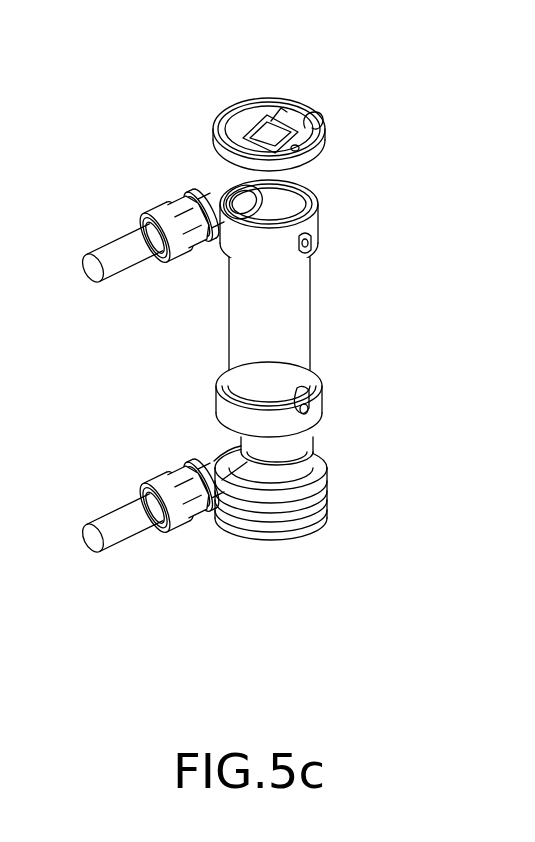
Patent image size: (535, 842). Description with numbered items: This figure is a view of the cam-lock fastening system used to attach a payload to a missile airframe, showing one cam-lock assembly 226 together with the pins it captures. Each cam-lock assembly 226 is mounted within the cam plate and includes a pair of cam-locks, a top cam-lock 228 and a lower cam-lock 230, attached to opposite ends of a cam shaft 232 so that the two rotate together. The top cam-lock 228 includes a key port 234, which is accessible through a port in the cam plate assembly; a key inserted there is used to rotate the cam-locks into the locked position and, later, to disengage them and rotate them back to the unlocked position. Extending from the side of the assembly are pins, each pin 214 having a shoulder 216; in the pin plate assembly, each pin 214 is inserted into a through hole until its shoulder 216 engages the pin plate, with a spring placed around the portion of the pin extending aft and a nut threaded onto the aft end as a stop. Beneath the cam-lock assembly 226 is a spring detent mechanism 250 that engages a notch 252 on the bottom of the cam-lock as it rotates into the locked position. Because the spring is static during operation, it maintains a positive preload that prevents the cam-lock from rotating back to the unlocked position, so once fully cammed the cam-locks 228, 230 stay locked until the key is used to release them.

The pin 214 is at (138, 72).
The shoulder 216 is at (165, 196).
The cam-lock assembly 226 is at (366, 123).
The top cam-lock 228 is at (320, 179).
The cam-lock 230 is at (321, 442).
The cam shaft 232 is at (311, 302).
The key port 234 is at (281, 110).
The spring detent mechanism 250 is at (262, 508).
The notch 252 is at (315, 492).